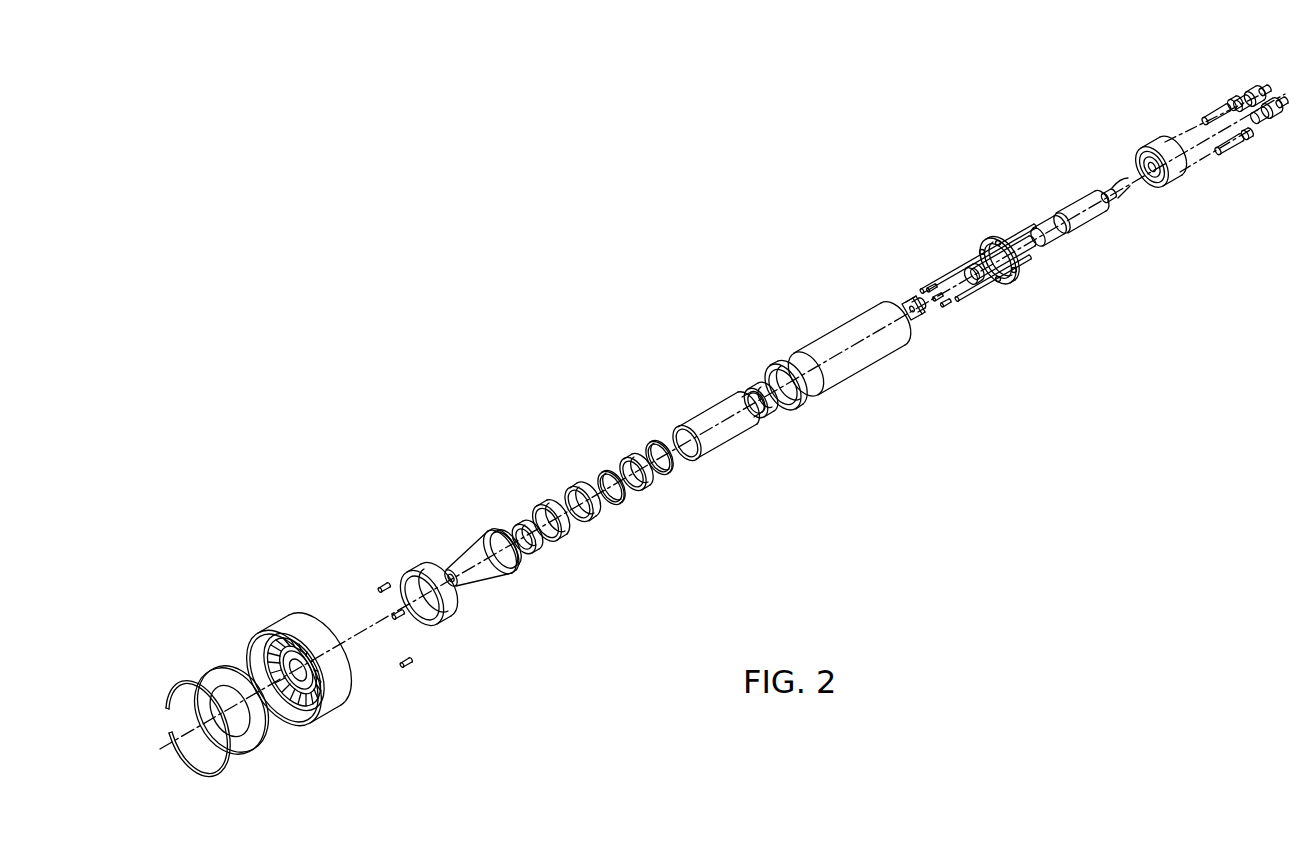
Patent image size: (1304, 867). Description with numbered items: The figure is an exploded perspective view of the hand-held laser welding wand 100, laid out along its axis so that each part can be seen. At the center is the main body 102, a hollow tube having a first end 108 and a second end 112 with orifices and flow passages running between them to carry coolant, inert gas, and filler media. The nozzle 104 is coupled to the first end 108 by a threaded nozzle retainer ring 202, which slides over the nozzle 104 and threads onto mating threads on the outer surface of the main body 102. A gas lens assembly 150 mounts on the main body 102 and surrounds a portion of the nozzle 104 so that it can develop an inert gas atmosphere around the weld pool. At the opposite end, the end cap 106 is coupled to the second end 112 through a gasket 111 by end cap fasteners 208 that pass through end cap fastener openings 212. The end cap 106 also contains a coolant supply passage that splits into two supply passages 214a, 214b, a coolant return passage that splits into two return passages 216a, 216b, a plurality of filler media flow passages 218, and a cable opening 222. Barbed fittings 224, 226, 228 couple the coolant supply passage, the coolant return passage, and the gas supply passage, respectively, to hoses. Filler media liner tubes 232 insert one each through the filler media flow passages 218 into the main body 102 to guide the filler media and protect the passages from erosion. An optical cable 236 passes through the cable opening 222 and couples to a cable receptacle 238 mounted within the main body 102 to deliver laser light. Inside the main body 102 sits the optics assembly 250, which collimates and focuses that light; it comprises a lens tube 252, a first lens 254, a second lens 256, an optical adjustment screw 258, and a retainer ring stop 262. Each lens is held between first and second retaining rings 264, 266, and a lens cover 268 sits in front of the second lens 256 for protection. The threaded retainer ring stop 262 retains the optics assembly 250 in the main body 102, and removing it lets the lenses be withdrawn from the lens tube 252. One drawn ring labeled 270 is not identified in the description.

The hand-held laser welding wand 100 is at (479, 226).
The main body 102 is at (845, 320).
The nozzle 104 is at (487, 582).
The end cap 106 is at (1134, 147).
The first end 108 is at (774, 364).
The gasket 111 is at (1012, 291).
The second end 112 is at (908, 340).
The gas lens assembly 150 is at (421, 656).
The nozzle retainer ring 202 is at (435, 620).
The end cap fasteners 208 is at (1265, 128).
The end cap fastener openings 212 is at (1150, 140).
The coolant supply passage 214a is at (1175, 137).
The coolant supply passage 214b is at (1174, 190).
The coolant return passage 216a is at (1134, 151).
The coolant return passage 216b is at (1145, 188).
The filler media flow passages 218 is at (1136, 168).
The cable opening 222 is at (1148, 198).
The barbed fitting 224 is at (1238, 134).
The barbed fitting 226 is at (1230, 100).
The barbed fitting 228 is at (1253, 92).
The filler media liner tubes 232 is at (1002, 243).
The optical cable 236 is at (1064, 208).
The cable receptacle 238 is at (910, 297).
The optics assembly 250 is at (806, 455).
The lens tube 252 is at (724, 404).
The first lens 254 is at (638, 454).
The second lens 256 is at (600, 479).
The optical adjustment screw 258 is at (768, 419).
The retainer ring stop 262 is at (511, 527).
The first retaining ring 264 is at (620, 505).
The second retaining ring 266 is at (549, 545).
The lens cover 268 is at (549, 510).
The ring 270 is at (585, 527).